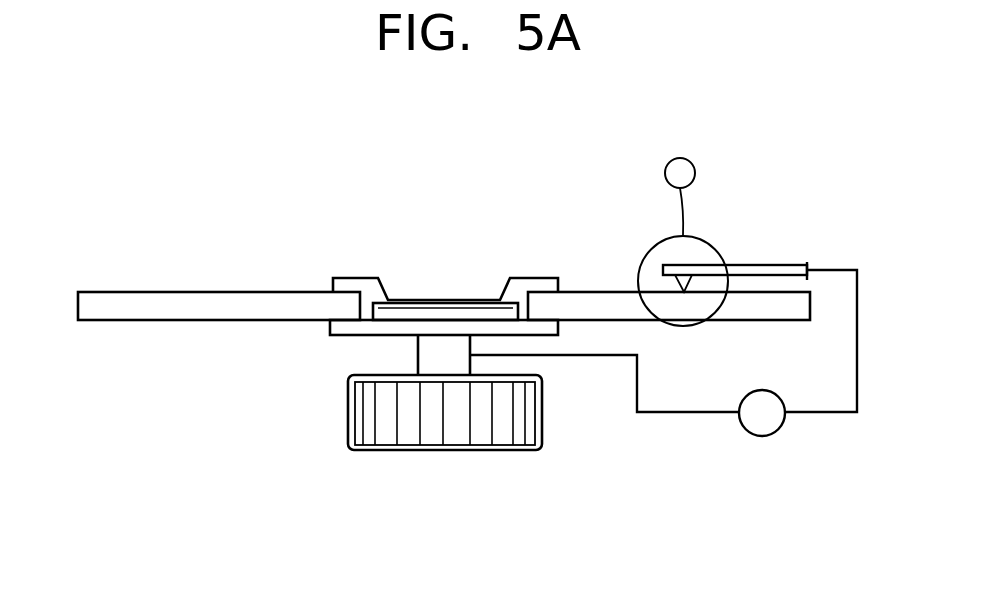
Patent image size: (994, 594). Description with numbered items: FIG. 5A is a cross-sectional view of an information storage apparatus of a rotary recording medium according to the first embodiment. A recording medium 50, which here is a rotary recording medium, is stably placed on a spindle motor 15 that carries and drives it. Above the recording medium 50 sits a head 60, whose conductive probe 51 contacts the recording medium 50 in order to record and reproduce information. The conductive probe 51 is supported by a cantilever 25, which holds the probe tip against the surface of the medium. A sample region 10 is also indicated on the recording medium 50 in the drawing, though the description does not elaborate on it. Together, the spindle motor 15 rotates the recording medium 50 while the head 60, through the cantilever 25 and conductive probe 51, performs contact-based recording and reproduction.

The sample (test specimen) 10 is at (443, 312).
The spindle motor 15 is at (358, 415).
The cantilever 25 is at (757, 266).
The recording medium 50 is at (223, 302).
The conductive probe 51 is at (662, 276).
The head 60 is at (730, 209).